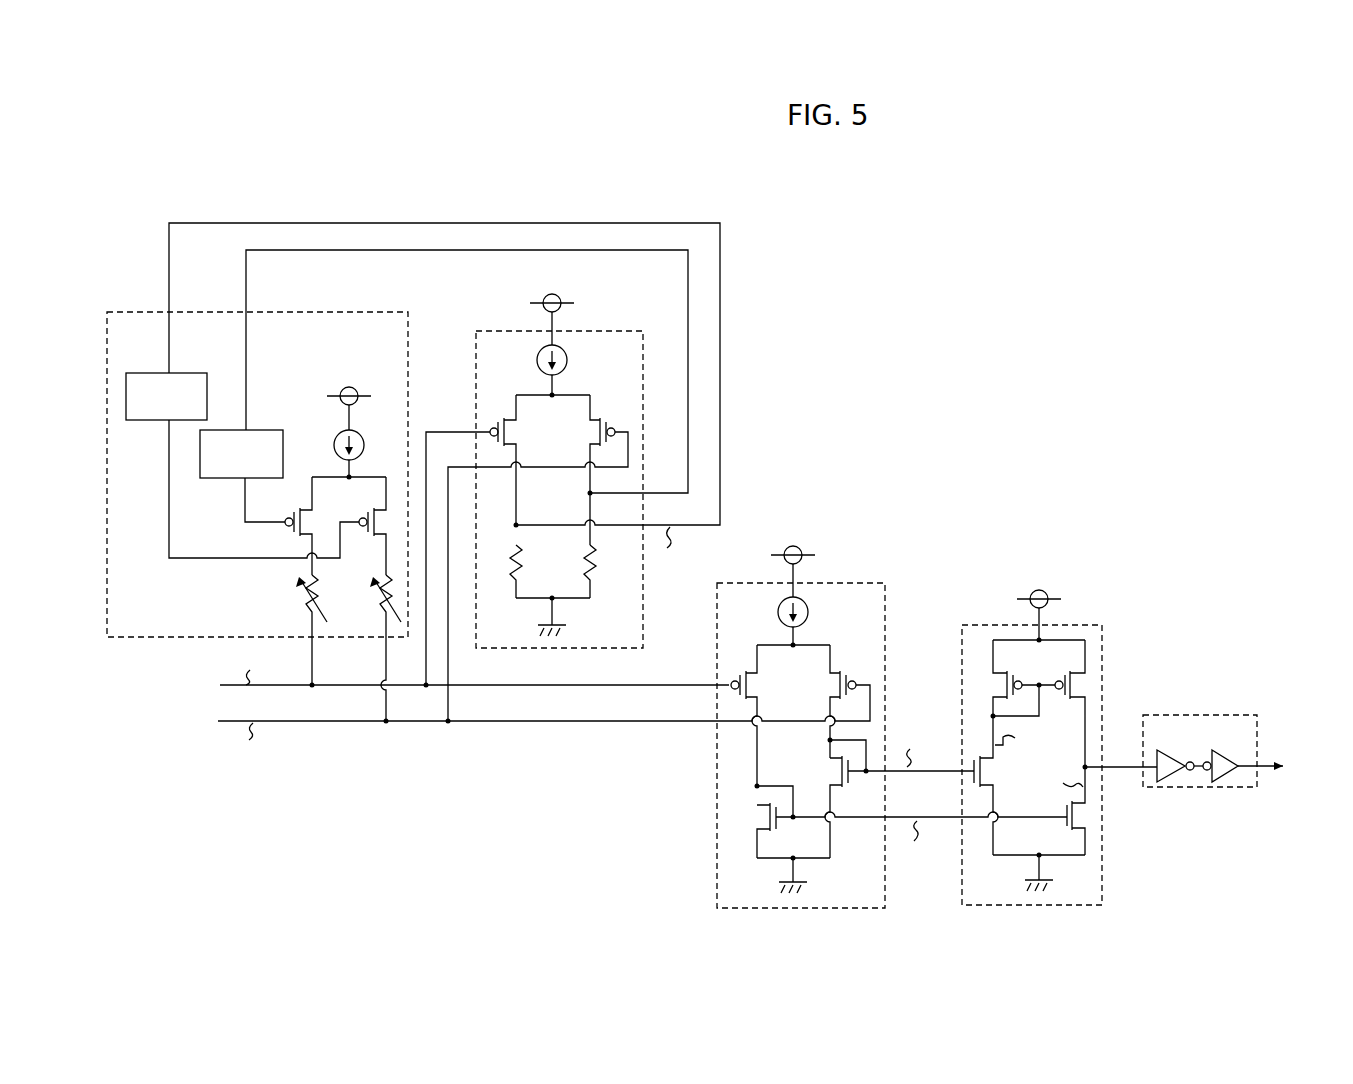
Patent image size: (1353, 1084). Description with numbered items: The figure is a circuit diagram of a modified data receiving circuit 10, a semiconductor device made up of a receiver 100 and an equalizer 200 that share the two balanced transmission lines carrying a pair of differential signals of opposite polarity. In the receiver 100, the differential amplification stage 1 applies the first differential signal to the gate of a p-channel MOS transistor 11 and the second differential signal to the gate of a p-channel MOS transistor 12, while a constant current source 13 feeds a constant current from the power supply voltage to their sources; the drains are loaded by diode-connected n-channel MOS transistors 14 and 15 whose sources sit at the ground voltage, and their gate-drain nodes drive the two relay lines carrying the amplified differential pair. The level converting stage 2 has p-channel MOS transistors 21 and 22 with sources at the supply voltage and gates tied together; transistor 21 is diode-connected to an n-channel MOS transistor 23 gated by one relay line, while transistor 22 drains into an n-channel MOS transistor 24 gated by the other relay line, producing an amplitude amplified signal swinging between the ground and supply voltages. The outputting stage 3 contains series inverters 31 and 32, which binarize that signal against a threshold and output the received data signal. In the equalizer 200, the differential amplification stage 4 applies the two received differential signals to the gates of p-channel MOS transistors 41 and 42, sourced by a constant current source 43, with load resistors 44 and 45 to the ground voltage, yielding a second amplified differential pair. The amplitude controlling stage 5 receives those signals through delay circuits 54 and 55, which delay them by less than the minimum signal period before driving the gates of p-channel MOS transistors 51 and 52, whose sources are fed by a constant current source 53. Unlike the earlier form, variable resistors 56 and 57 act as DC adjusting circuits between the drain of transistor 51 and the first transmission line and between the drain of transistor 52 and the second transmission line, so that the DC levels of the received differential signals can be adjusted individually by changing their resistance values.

The data receiving circuit 10 is at (1013, 326).
The equalizer 200 is at (740, 372).
The receiver 100 is at (778, 508).
The amplitude controlling stage 5 is at (378, 312).
The delay circuit 55 is at (192, 373).
The delay circuit 54 is at (257, 430).
The constant current source 53 is at (335, 443).
The p-channel MOS transistor 51 is at (291, 516).
The p-channel MOS transistor 52 is at (363, 516).
The variable resistor 56 is at (306, 608).
The variable resistor 57 is at (383, 608).
The differential amplification stage 4 is at (613, 332).
The constant current source 43 is at (567, 362).
The p-channel MOS transistor 41 is at (508, 432).
The p-channel MOS transistor 42 is at (598, 432).
The resistor 44 is at (523, 552).
The resistor 45 is at (583, 568).
The differential amplification stage 1 is at (866, 582).
The constant current source 13 is at (808, 614).
The p-channel MOS transistor 11 is at (748, 683).
The p-channel MOS transistor 12 is at (837, 683).
The n-channel MOS transistor 14 is at (778, 825).
The n-channel MOS transistor 15 is at (838, 776).
The level converting stage 2 is at (1078, 625).
The p-channel MOS transistor 21 is at (1006, 690).
The p-channel MOS transistor 22 is at (1066, 673).
The n-channel MOS transistor 23 is at (990, 770).
The n-channel MOS transistor 24 is at (1062, 830).
The outputting stage 3 is at (1240, 715).
The inverter 31 is at (1163, 754).
The inverter 32 is at (1218, 752).